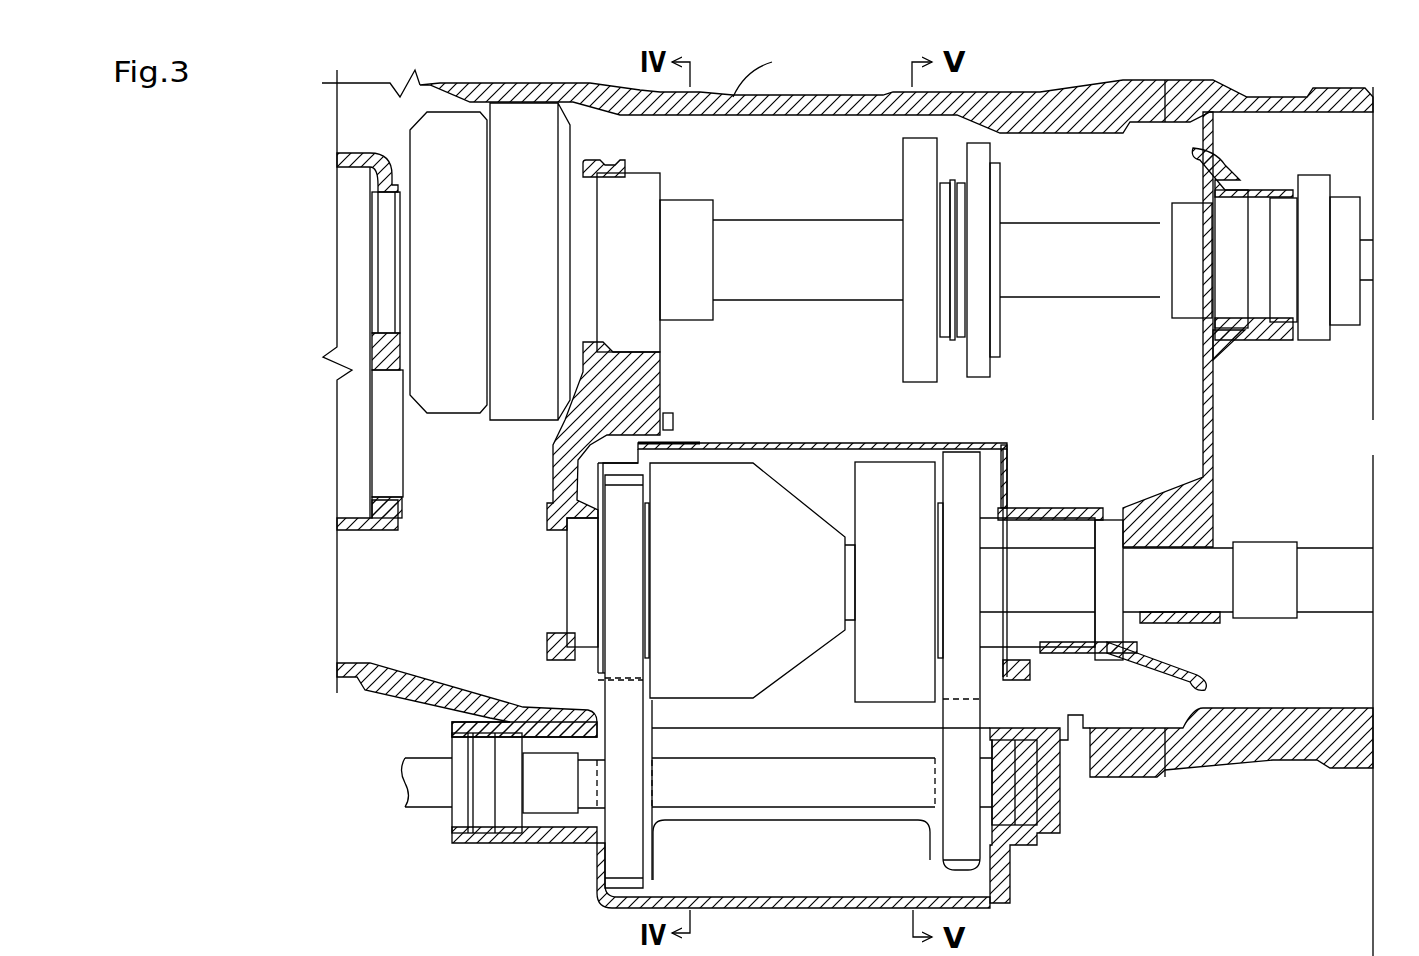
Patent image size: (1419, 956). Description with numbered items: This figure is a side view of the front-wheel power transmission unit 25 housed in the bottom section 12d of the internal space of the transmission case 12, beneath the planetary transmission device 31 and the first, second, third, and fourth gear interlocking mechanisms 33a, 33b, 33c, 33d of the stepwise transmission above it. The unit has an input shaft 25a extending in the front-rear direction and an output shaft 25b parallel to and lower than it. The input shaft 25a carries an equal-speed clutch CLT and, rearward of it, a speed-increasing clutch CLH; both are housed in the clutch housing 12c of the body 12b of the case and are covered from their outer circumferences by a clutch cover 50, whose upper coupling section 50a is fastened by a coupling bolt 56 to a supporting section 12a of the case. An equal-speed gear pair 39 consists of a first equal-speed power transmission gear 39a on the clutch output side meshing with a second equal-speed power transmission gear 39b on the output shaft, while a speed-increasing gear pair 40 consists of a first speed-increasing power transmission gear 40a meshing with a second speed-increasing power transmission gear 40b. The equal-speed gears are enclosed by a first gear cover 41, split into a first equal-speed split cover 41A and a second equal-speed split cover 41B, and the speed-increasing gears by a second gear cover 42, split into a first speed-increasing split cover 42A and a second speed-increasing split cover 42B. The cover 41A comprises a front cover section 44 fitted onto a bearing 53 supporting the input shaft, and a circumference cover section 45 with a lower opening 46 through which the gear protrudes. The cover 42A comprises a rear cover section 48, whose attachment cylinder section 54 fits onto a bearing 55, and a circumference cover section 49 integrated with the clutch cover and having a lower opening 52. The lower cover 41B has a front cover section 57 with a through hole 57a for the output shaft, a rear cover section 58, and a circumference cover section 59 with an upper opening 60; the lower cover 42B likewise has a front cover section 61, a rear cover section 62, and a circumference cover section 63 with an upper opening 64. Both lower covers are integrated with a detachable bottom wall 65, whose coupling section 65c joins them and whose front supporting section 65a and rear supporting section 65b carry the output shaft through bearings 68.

The transmission case 12 is at (1190, 70).
The supporting section 12a is at (660, 383).
The body 12b is at (808, 79).
The clutch housing 12c is at (1113, 707).
The bottom section 12d is at (462, 607).
The front-wheel power transmission unit 25 is at (1063, 390).
The input shaft 25a is at (1082, 557).
The output shaft 25b is at (770, 790).
The planetary transmission device 31 is at (385, 118).
The first gear interlocking mechanism 33a is at (688, 200).
The second gear interlocking mechanism 33b is at (1192, 208).
The third gear interlocking mechanism 33c is at (900, 153).
The fourth gear interlocking mechanism 33d is at (990, 155).
The equal-speed gear pair 39 is at (657, 545).
The first equal-speed power transmission gear 39a is at (632, 572).
The second equal-speed power transmission gear 39b is at (632, 782).
The speed-increasing gear pair 40 is at (907, 570).
The first speed-increasing power transmission gear 40a is at (957, 583).
The second speed-increasing power transmission gear 40b is at (953, 788).
The first gear cover 41 is at (500, 481).
The first equal-speed split cover 41A is at (593, 492).
The second equal-speed split cover 41B is at (585, 905).
The second gear cover 42 is at (1065, 552).
The first speed-increasing split cover 42A is at (1007, 455).
The second speed-increasing split cover 42B is at (1008, 887).
The front cover section 44 is at (573, 667).
The circumference cover section 45 is at (607, 457).
The opening 46 is at (603, 680).
The rear cover section 48 is at (1005, 493).
The circumference cover section 49 is at (978, 445).
The clutch cover 50 is at (838, 445).
The coupling section 50a is at (683, 442).
The opening 52 is at (995, 688).
The bearing 53 is at (573, 552).
The attachment cylinder section 54 is at (1090, 512).
The bearing 55 is at (1120, 578).
The coupling bolt 56 is at (675, 422).
The front cover section 57 is at (593, 870).
The through hole 57a is at (587, 822).
The rear cover section 58 is at (628, 838).
The circumference cover section 59 is at (627, 903).
The opening 60 is at (653, 718).
The front cover section 61 is at (957, 840).
The rear cover section 62 is at (1000, 860).
The circumference cover section 63 is at (962, 870).
The opening 64 is at (932, 718).
The bottom wall 65 is at (624, 857).
The front supporting section 65a is at (480, 843).
The rear supporting section 65b is at (1047, 817).
The coupling section 65c is at (758, 903).
The bearing 68 is at (483, 748).
The equal-speed clutch CLT is at (740, 470).
The speed-increasing clutch CLH is at (892, 475).